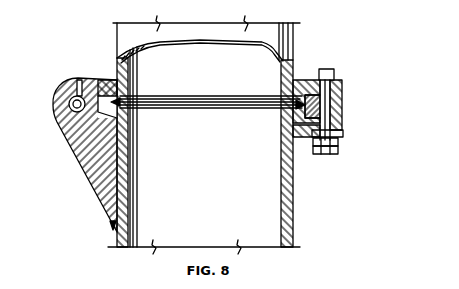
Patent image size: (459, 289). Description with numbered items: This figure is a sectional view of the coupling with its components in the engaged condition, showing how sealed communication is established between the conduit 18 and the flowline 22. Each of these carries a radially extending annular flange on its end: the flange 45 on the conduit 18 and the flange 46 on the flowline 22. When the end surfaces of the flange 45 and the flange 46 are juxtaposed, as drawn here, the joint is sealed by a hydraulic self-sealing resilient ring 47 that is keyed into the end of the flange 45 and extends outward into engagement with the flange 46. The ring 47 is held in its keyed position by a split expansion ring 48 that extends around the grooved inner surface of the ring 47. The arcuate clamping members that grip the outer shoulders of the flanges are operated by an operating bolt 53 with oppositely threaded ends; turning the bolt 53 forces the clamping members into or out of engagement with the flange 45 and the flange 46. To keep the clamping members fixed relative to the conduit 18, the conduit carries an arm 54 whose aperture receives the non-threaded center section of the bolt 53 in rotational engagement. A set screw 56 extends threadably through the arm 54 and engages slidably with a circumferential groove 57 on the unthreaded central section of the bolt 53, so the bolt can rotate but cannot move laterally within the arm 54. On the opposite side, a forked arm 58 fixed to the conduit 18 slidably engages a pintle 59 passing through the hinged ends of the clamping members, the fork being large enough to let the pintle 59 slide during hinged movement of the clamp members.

The conduit 18 is at (288, 178).
The flowline 22 is at (290, 38).
The annular flange 45 is at (292, 122).
The annular flange 46 is at (289, 91).
The hydraulic self-sealing resilient ring 47 is at (120, 105).
The split expansion ring 48 is at (283, 112).
The operating bolt 53 is at (62, 113).
The arm 54 is at (79, 143).
The set screw 56 is at (79, 80).
The circumferential groove 57 is at (69, 98).
The forked arm 58 is at (340, 135).
The pintle 59 is at (330, 72).